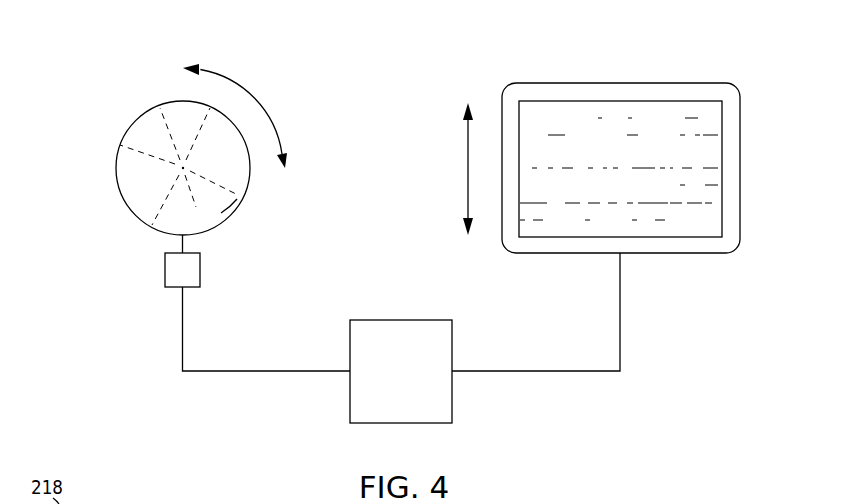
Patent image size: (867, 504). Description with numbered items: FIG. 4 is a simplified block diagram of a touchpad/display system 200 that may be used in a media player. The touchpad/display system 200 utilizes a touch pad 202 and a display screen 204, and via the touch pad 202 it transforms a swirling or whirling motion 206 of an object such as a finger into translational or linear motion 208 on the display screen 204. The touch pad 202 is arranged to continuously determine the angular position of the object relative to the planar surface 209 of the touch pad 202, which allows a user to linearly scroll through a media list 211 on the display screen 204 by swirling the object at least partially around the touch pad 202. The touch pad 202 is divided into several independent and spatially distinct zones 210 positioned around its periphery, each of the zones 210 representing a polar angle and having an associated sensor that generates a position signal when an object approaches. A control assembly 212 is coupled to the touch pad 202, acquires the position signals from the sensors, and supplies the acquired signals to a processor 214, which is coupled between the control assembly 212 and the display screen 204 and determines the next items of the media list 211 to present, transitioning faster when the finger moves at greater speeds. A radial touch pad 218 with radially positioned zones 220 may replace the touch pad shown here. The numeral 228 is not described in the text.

The touchpad/display system 200 is at (397, 58).
The touch pad 202 is at (116, 170).
The display screen 204 is at (740, 177).
The swirling or whirling motion 206 is at (250, 90).
The translational or linear motion 208 is at (468, 168).
The planar surface 209 is at (164, 232).
The zones 210 is at (145, 125).
The media list 211 is at (548, 130).
The control assembly 212 is at (173, 277).
The processor 214 is at (438, 403).
The radial touch pad 218 is at (184, 169).
The radial zones 220 is at (227, 217).
The reference (adjacent figure fragment) 228 is at (700, 500).